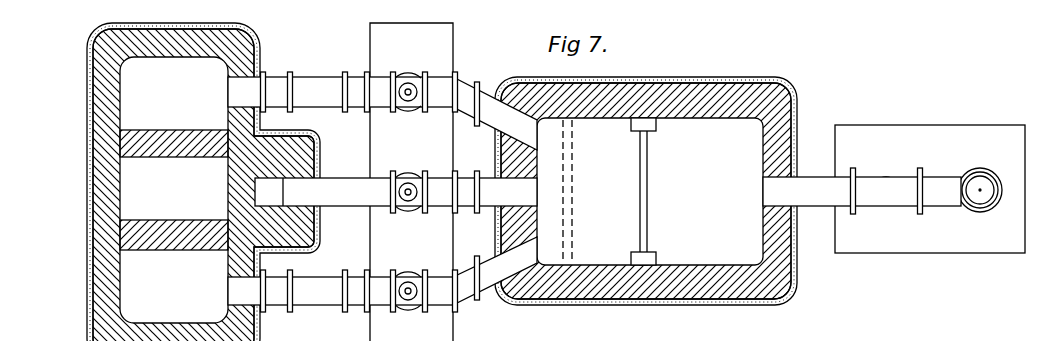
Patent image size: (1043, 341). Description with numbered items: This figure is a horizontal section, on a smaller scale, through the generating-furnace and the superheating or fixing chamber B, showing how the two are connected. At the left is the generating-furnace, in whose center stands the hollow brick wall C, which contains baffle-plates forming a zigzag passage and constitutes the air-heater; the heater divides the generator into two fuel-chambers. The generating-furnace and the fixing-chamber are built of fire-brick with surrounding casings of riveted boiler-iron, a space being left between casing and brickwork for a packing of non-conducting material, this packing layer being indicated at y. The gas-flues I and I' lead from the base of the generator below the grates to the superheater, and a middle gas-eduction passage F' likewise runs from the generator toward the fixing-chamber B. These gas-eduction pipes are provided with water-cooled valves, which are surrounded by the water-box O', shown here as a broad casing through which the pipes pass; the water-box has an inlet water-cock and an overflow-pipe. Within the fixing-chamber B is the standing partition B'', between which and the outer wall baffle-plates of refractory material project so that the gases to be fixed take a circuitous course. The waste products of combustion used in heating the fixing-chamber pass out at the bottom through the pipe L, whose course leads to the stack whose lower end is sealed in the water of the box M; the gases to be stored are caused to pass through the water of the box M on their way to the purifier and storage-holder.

The hollow brick wall C is at (191, 182).
The non-conducting jacket y is at (177, 26).
The gas-flue I is at (382, 111).
The gas-flue I' is at (382, 283).
The piston rod F' is at (396, 192).
The water-box O' is at (411, 182).
The fixing-chamber B is at (646, 205).
The standing partition B'' is at (609, 191).
The pipe L is at (862, 202).
The box M is at (930, 189).